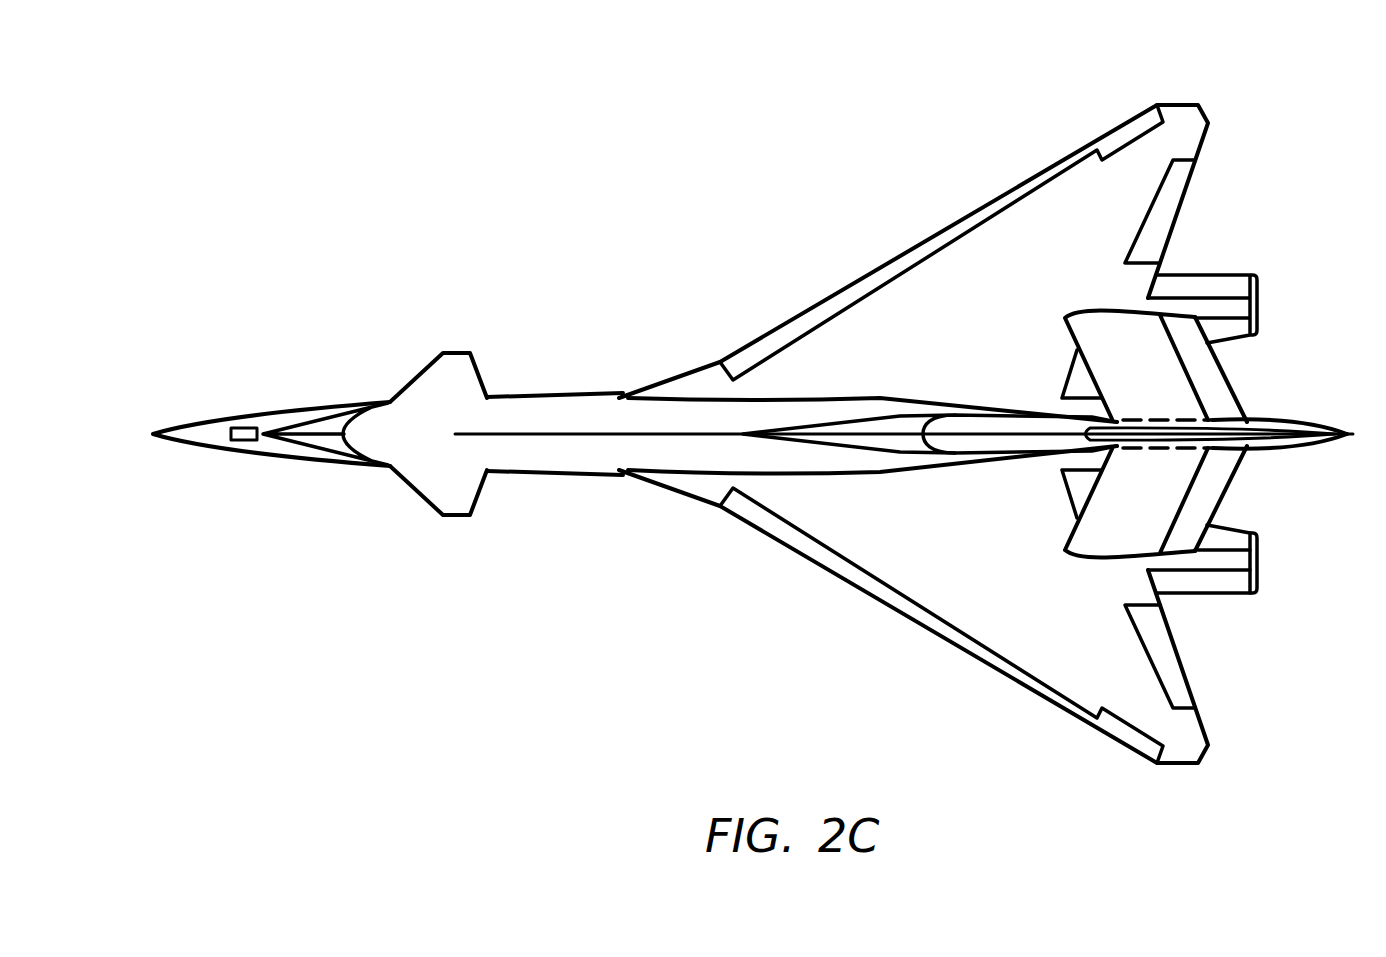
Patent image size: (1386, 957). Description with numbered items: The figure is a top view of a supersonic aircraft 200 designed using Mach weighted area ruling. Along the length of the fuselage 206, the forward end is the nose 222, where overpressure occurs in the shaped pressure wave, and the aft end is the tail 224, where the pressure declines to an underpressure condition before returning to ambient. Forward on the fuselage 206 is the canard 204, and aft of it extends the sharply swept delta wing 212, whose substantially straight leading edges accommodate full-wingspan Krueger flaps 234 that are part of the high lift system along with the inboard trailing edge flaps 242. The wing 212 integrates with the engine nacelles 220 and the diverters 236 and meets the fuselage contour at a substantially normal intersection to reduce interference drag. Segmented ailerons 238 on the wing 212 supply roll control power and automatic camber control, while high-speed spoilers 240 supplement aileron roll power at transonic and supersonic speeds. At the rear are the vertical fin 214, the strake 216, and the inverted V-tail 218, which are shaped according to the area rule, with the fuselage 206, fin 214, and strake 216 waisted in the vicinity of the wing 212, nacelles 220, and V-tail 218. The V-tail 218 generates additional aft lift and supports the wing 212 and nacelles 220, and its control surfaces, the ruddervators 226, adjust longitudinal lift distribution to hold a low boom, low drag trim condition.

The supersonic aircraft 200 is at (255, 224).
The canard 204 is at (447, 503).
The fuselage 206 is at (560, 473).
The wing 212 is at (1182, 103).
The vertical fin 214 is at (1277, 430).
The strake 216 is at (898, 455).
The inverted V-tail 218 is at (1163, 511).
The nacelle 220 is at (1195, 597).
The nose 222 is at (163, 443).
The tail 224 is at (1328, 437).
The ruddervator 226 is at (1210, 493).
The Krueger flap 234 is at (850, 588).
The diverter 236 is at (1243, 562).
The segmented aileron 238 is at (1188, 678).
The high-speed spoiler 240 is at (1105, 727).
The inboard trailing edge flap 242 is at (1070, 503).